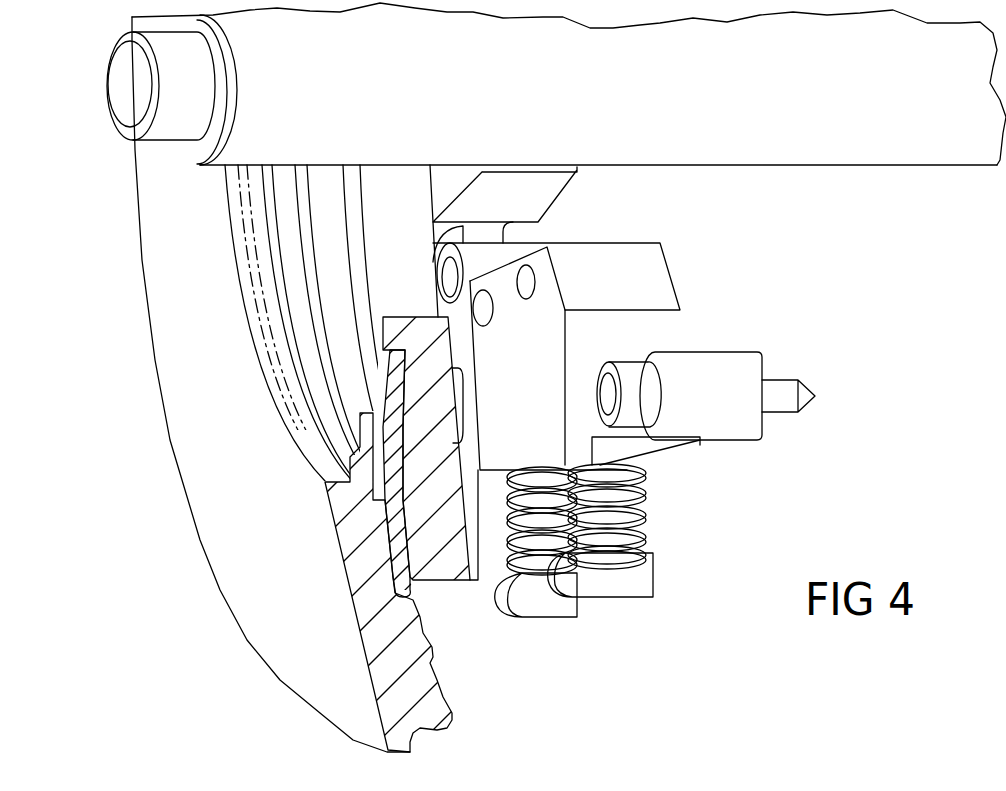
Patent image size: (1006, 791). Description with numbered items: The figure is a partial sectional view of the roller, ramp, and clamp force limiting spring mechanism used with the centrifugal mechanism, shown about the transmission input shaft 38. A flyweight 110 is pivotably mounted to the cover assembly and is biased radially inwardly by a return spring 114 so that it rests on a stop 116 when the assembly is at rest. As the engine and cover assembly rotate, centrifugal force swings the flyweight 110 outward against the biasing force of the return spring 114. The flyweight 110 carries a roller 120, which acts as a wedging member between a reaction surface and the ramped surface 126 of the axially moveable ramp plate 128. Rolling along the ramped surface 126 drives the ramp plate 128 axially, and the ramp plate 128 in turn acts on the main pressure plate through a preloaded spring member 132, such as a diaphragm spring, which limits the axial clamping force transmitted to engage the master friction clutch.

The transmission input shaft 38 is at (118, 70).
The flyweight 110 is at (528, 391).
The return spring 114 is at (633, 510).
The stop 116 is at (447, 243).
The roller 120 is at (450, 418).
The ramped surface 126 is at (450, 357).
The ramp plate 128 is at (450, 560).
The preloaded spring member 132 is at (400, 570).